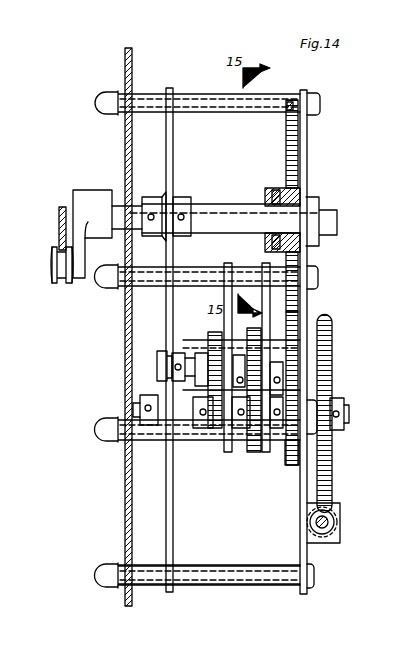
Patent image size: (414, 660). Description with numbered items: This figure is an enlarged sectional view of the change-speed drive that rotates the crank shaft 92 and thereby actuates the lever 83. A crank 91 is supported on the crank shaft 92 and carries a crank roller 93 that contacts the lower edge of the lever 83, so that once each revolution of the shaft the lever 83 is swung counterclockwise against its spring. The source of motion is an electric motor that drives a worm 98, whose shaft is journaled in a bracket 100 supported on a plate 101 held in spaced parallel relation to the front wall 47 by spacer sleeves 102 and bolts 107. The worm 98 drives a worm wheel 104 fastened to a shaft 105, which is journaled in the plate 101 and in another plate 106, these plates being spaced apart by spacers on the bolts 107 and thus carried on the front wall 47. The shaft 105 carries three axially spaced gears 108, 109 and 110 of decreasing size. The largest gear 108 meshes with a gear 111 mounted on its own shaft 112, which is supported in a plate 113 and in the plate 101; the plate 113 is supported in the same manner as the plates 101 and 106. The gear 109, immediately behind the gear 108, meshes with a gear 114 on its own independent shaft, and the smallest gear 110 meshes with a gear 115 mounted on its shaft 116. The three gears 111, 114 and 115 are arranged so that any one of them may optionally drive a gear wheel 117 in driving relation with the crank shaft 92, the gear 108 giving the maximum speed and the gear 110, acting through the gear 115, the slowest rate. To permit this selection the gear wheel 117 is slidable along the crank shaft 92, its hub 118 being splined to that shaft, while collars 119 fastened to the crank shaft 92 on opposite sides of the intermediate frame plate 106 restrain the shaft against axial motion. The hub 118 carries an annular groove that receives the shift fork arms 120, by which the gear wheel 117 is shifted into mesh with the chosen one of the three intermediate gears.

The front wall 47 is at (126, 62).
The lever 83 is at (58, 228).
The crank 91 is at (73, 200).
The crank shaft 92 is at (121, 204).
The crank roller 93 is at (55, 280).
The worm 98 is at (334, 528).
The bracket 100 is at (340, 543).
The plate 101 is at (307, 554).
The spacer sleeves 102 is at (206, 585).
The worm wheel 104 is at (331, 332).
The shaft 105 is at (345, 415).
The plate 106 is at (174, 166).
The bolts 107 is at (102, 432).
The gear 108 is at (286, 454).
The gear 109 is at (248, 453).
The gear 110 is at (212, 440).
The gear 111 is at (297, 312).
The shaft 112 is at (314, 322).
The plate 113 is at (266, 283).
The gear 114 is at (245, 336).
The gear 115 is at (195, 352).
The shaft 116 is at (157, 363).
The gear wheel 117 is at (296, 157).
The hub 118 is at (265, 198).
The collars 119 is at (180, 196).
The shift fork arms 120 is at (277, 188).